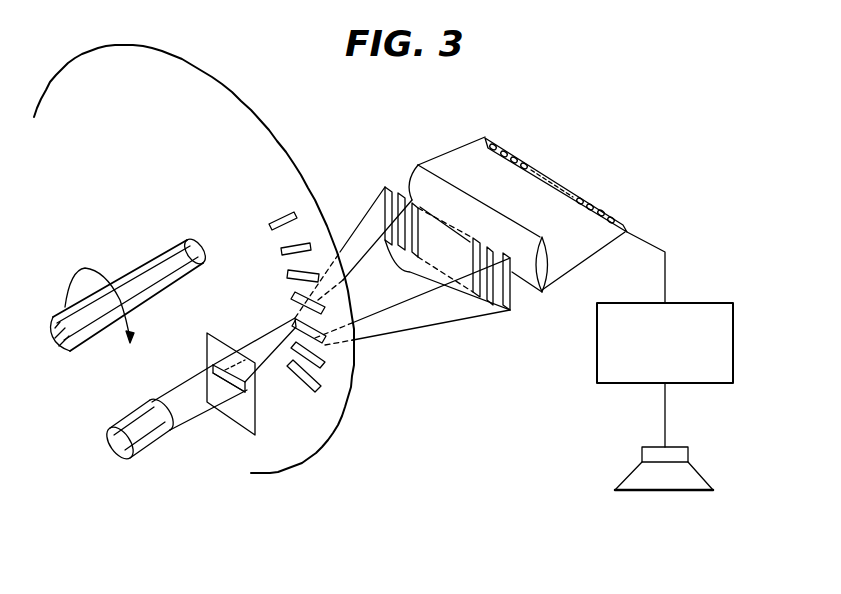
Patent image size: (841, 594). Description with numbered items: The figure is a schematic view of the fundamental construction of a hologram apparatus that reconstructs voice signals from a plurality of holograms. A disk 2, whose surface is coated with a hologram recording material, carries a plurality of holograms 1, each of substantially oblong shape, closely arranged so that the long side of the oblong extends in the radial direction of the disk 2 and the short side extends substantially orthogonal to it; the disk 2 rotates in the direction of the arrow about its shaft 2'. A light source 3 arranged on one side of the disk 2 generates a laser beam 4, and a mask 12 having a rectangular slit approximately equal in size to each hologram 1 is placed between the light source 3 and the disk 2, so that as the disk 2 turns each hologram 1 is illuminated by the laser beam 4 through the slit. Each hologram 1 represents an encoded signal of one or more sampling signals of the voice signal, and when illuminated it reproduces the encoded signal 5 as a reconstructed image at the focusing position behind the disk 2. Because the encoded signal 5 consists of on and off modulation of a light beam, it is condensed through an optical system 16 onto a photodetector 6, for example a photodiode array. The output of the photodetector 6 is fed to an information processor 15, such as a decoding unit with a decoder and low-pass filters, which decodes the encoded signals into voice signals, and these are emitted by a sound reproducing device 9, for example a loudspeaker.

The holograms 1 is at (281, 250).
The disk 2 is at (194, 259).
The shaft 2' is at (128, 282).
The light source 3 is at (152, 442).
The laser beam 4 is at (267, 334).
The encoded signal 5 is at (410, 273).
The photodetector 6 is at (550, 177).
The sound reproducing device 9 is at (678, 490).
The mask 12 is at (250, 420).
The information processor 15 is at (695, 302).
The optical system 16 is at (470, 197).